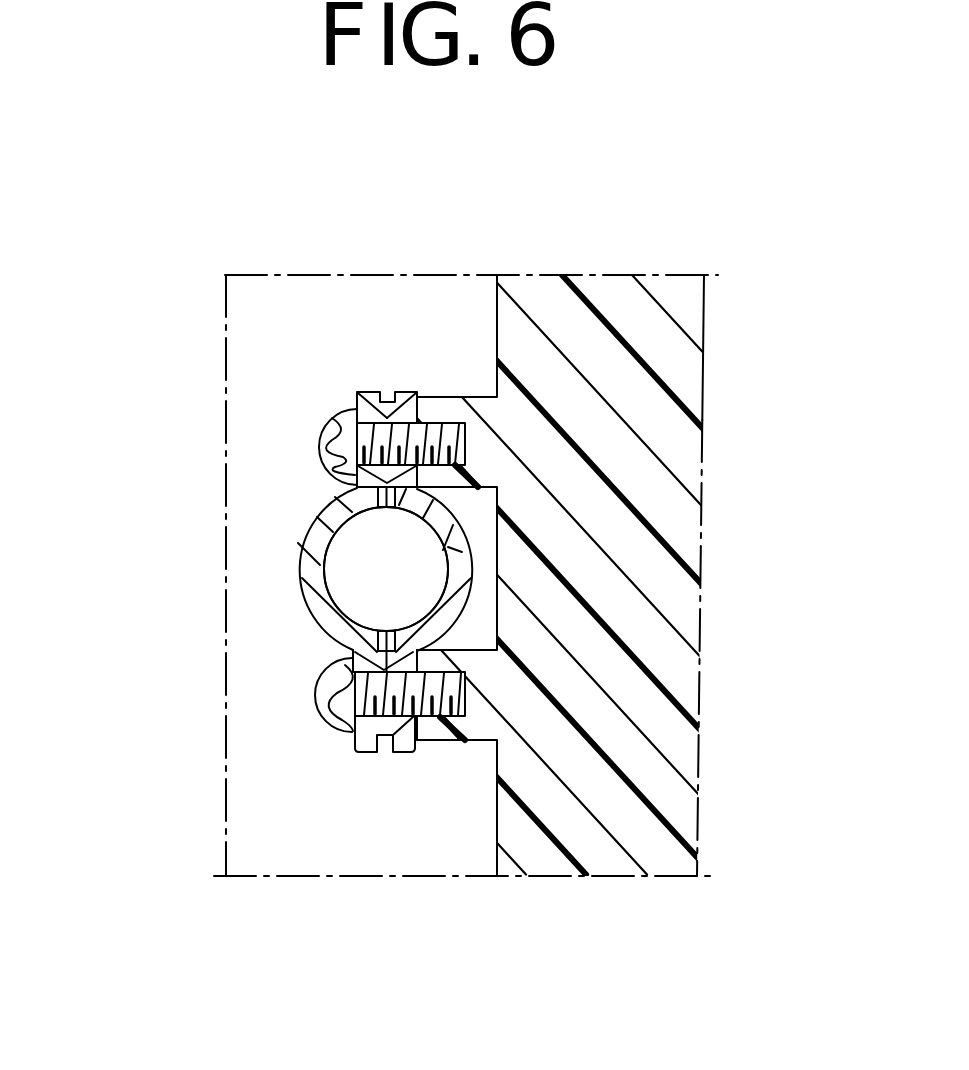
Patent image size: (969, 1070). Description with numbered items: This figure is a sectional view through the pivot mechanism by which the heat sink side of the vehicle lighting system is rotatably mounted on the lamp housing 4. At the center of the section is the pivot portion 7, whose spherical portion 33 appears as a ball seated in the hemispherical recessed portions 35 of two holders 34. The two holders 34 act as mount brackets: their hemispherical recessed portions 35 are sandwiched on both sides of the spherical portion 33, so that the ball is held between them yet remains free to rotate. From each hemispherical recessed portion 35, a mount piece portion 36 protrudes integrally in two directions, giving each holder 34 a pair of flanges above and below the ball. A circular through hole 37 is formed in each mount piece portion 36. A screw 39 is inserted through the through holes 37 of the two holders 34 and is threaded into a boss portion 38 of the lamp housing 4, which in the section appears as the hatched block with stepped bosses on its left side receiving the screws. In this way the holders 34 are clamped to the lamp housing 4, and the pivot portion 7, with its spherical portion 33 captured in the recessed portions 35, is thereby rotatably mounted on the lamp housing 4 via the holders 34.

The lamp housing 4 is at (667, 270).
The pivot portion 7 is at (442, 538).
The spherical portion 33 is at (352, 547).
The holder 34 is at (310, 623).
The hemispherical recessed portion 35 is at (298, 564).
The mount piece portion 36 is at (373, 390).
The through hole 37 is at (417, 423).
The boss portion 38 is at (322, 423).
The screw 39 is at (462, 402).